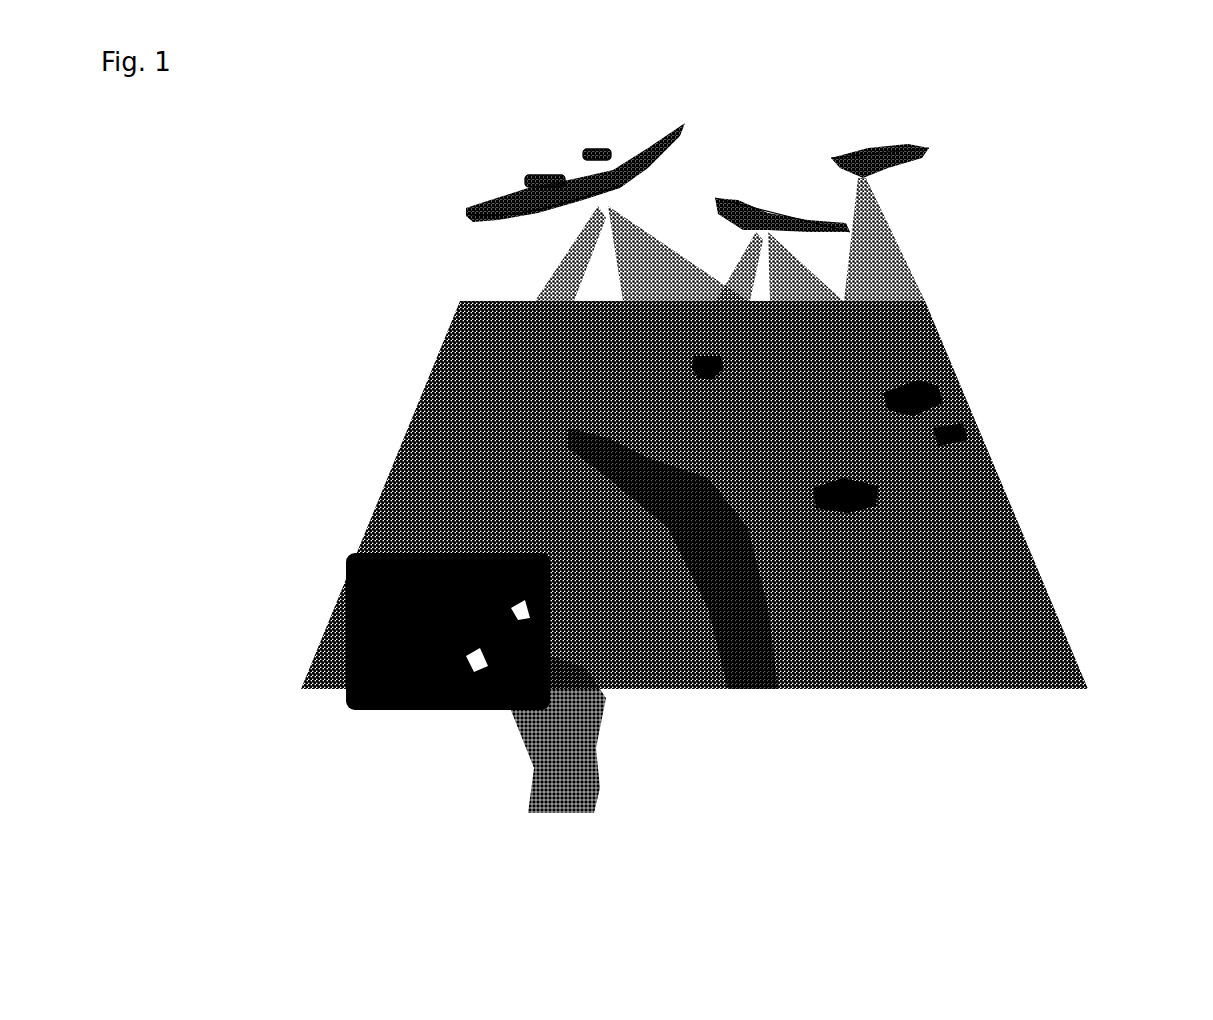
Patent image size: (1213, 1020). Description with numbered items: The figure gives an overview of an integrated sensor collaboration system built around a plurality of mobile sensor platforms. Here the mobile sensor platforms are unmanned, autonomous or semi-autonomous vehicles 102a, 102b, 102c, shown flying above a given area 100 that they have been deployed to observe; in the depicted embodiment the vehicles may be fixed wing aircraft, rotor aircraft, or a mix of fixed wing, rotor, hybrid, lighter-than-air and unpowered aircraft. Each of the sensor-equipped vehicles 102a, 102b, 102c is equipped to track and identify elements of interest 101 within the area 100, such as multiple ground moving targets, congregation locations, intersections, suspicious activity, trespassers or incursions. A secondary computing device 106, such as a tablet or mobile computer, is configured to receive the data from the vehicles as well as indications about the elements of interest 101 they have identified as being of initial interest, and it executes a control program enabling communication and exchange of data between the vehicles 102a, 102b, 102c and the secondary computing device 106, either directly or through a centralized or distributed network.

The given area 100 is at (462, 412).
The elements of interest 101 is at (782, 343).
The unmanned vehicle 102a is at (540, 143).
The unmanned vehicle 102b is at (752, 172).
The unmanned vehicle 102c is at (878, 122).
The secondary computing device 106 is at (319, 542).